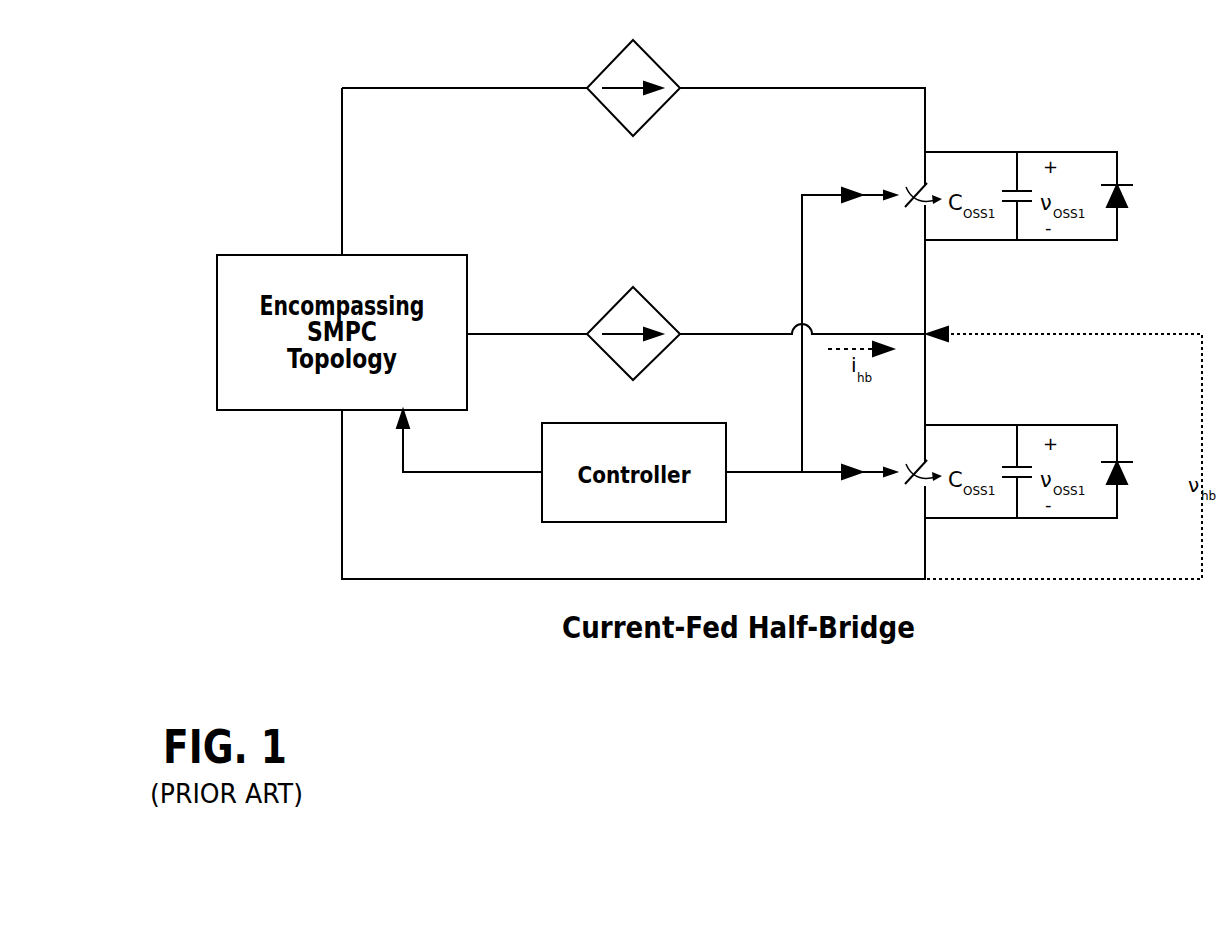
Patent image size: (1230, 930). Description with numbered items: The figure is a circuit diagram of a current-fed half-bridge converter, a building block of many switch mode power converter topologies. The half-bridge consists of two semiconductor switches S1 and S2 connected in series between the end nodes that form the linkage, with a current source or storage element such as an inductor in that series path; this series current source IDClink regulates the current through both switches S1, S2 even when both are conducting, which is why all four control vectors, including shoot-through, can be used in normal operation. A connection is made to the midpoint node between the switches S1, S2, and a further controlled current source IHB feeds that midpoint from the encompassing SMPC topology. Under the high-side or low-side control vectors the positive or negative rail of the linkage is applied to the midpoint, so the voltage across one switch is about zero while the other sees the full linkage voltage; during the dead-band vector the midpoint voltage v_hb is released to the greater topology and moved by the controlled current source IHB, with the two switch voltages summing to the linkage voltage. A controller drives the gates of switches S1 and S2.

The first semiconductor switch S1 is at (907, 184).
The second semiconductor switch S2 is at (907, 461).
The linkage current source IDClink is at (658, 88).
The half-bridge midpoint current source IHB is at (647, 333).